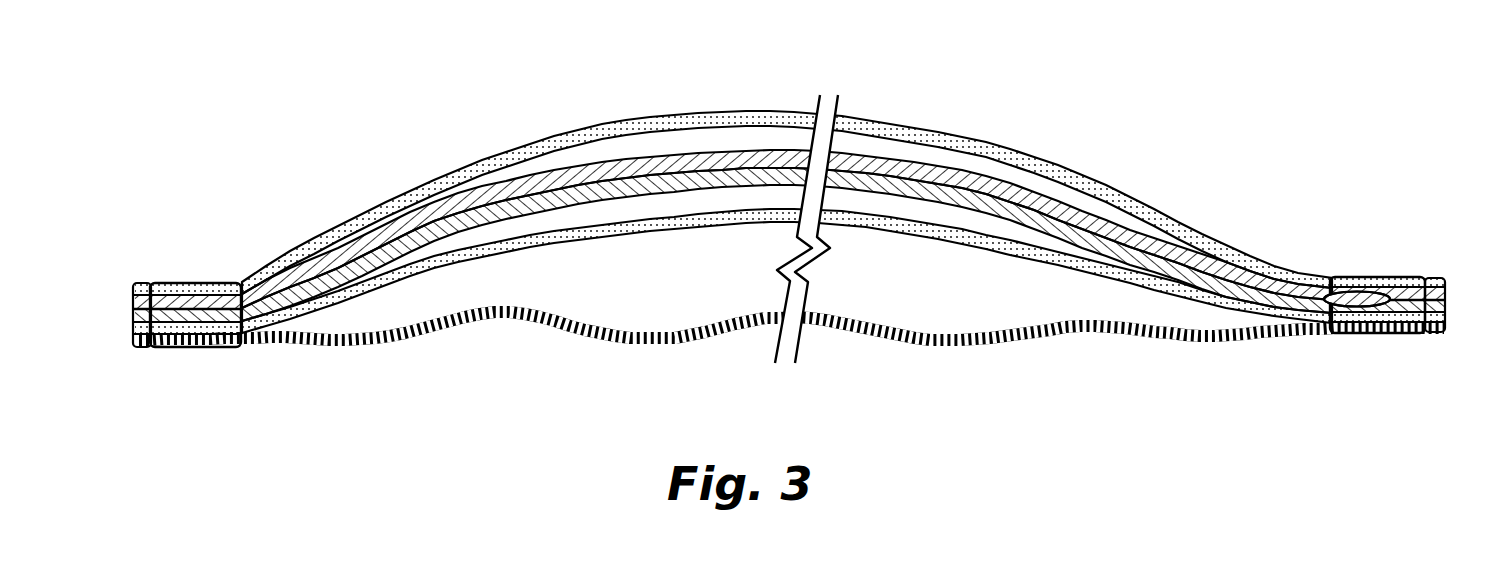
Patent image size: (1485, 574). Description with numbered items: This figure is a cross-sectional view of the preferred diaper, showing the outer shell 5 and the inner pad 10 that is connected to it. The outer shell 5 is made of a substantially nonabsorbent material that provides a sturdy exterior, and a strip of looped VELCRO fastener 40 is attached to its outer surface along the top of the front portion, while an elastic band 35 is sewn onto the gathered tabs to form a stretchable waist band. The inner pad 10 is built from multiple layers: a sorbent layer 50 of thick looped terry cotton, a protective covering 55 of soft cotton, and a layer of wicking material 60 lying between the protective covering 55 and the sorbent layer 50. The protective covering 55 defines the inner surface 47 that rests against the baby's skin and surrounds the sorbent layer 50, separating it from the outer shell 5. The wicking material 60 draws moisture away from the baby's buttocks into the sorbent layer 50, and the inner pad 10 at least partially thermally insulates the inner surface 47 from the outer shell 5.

The outer shell 5 is at (549, 327).
The inner pad 10 is at (149, 335).
The elastic band 35 is at (1363, 291).
The looped VELCRO fastener 40 is at (179, 355).
The inner surface 47 is at (787, 174).
The sorbent layer 50 is at (590, 203).
The protective covering 55 is at (388, 207).
The wicking material 60 is at (563, 168).